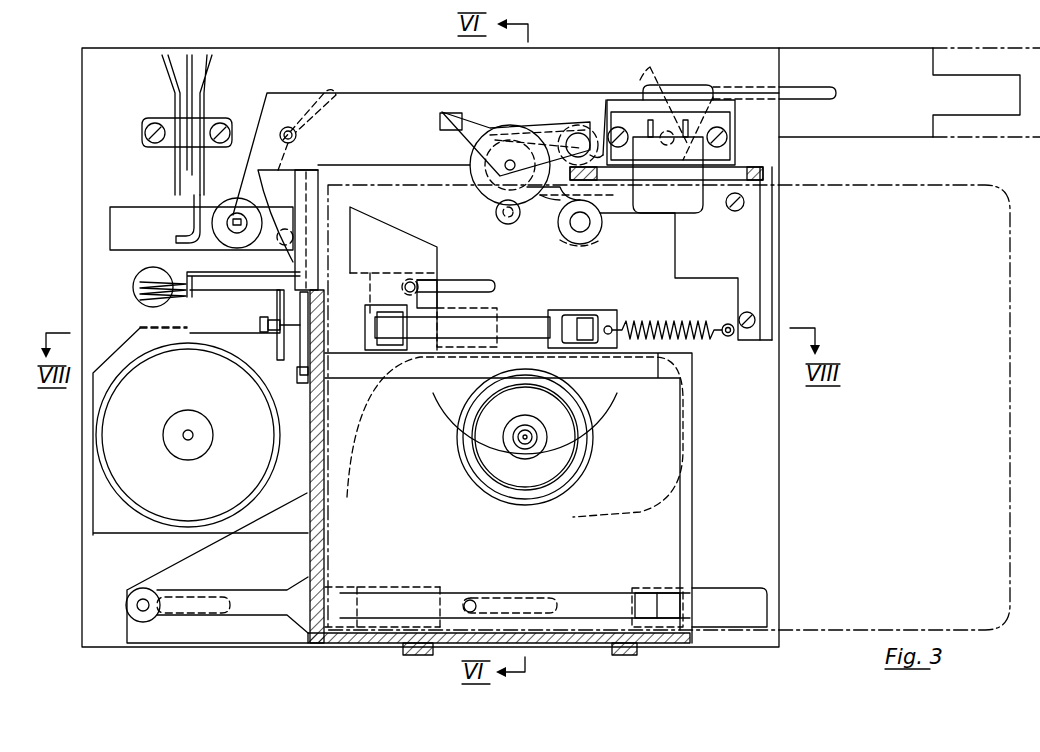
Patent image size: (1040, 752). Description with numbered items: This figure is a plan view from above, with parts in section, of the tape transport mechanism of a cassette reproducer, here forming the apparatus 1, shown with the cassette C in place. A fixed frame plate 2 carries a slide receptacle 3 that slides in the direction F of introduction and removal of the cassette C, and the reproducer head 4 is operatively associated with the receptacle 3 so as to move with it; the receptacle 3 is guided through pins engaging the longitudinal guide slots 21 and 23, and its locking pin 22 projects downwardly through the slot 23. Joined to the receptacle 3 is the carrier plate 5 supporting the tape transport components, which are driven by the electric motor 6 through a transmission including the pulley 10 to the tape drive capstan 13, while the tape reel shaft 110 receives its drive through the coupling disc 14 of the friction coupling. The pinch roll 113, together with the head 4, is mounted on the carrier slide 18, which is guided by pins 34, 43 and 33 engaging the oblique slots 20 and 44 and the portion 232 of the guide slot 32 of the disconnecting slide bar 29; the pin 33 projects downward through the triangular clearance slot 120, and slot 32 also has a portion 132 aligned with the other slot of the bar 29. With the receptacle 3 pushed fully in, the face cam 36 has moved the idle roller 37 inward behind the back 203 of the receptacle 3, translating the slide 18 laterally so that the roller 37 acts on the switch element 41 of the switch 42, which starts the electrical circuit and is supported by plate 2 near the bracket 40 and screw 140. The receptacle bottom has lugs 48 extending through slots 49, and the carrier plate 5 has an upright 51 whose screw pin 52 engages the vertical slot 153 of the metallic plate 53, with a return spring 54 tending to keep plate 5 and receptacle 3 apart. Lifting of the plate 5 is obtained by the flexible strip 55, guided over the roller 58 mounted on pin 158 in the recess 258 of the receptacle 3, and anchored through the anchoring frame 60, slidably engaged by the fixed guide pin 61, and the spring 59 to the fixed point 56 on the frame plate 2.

The apparatus 1 is at (788, 517).
The frame plate 2 is at (82, 98).
The slide receptacle 3 is at (300, 546).
The reproducer head 4 is at (693, 208).
The carrier plate 5 is at (116, 352).
The electric motor 6 is at (112, 444).
The pulley 10 is at (488, 495).
The tape drive capstan 13 is at (497, 218).
The coupling disc 14 is at (560, 423).
The carrier slide 18 is at (400, 95).
The oblique guide slot 20 is at (300, 105).
The longitudinal guide slot 21 is at (205, 597).
The locking pin 22 is at (410, 282).
The longitudinal guide slot 23 is at (465, 284).
The disconnecting slide bar 29 is at (892, 61).
The guide slot 32 is at (818, 83).
The second pin 33 is at (668, 166).
The pin 34 is at (298, 132).
The face cam 36 is at (268, 179).
The idle roller 37 is at (232, 206).
The mounting bracket 40 is at (768, 177).
The switch element 41 is at (190, 247).
The switch 42 is at (166, 93).
The pin 43 is at (285, 232).
The oblique guide slot 44 is at (312, 166).
The lugs 48 is at (360, 592).
The slots 49 is at (440, 590).
The vertical upright 51 is at (277, 350).
The screw pin 52 is at (278, 333).
The metallic plate 53 is at (300, 398).
The return spring 54 is at (160, 305).
The flexible strip element 55 is at (530, 311).
The fixed point 56 is at (729, 338).
The guide roller 58 is at (400, 350).
The spring 59 is at (697, 324).
The anchoring frame 60 is at (618, 300).
The fixed guide pin 61 is at (580, 315).
The tape reel shaft 110 is at (548, 437).
The pinch roll 113 is at (478, 191).
The triangular clearance slot 120 is at (690, 85).
The portion of guide slot 132 is at (836, 96).
The screw 140 is at (746, 190).
The vertical slot 153 is at (300, 350).
The pin 158 is at (388, 350).
The back of receptacle 203 is at (320, 170).
The portion of guide slot 232 is at (657, 92).
The recess 258 is at (363, 310).
The cassette C is at (982, 182).
The direction of introduction F is at (985, 412).